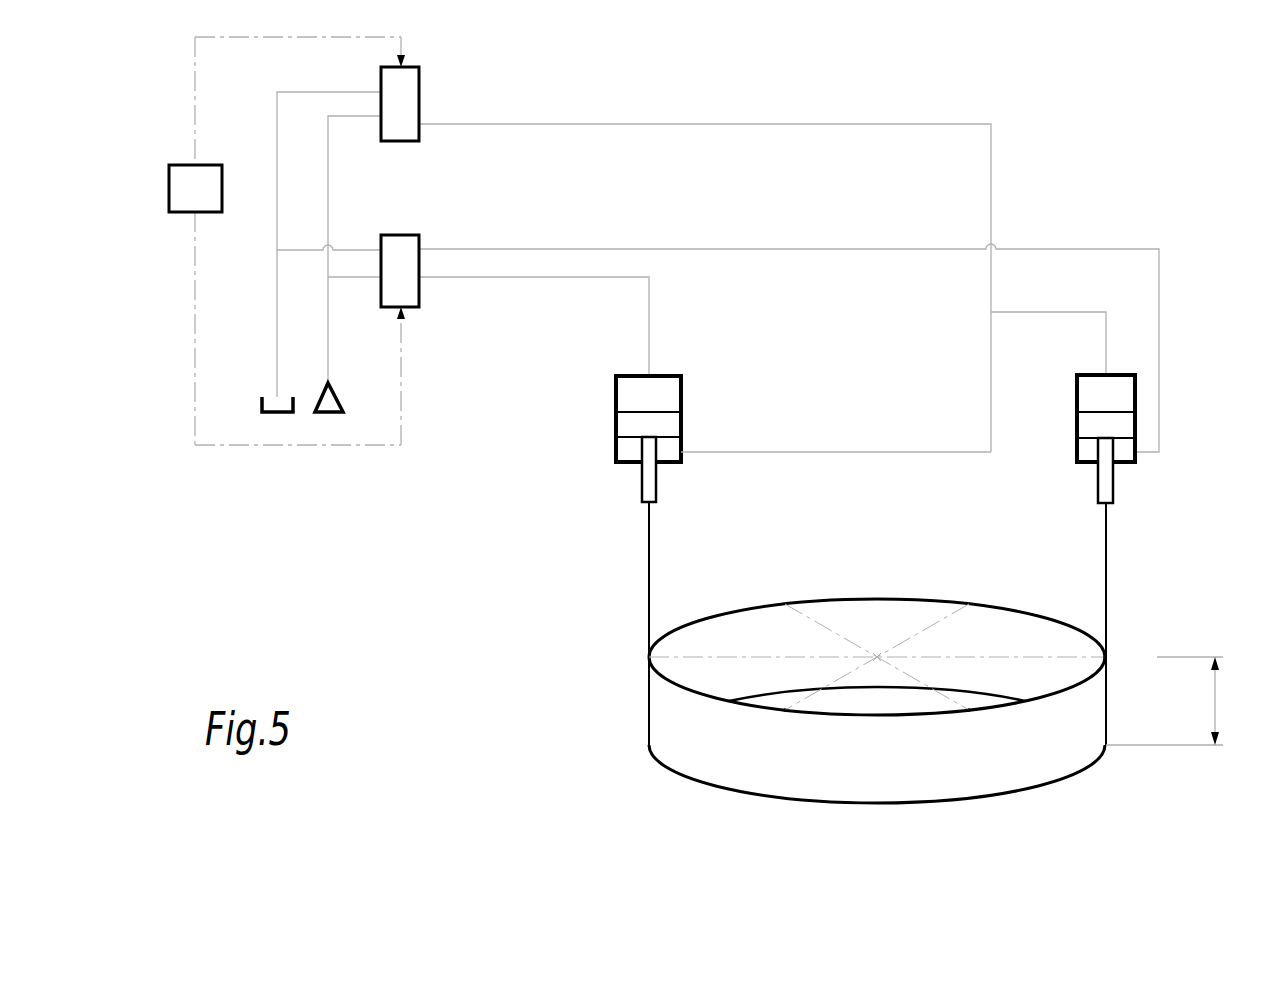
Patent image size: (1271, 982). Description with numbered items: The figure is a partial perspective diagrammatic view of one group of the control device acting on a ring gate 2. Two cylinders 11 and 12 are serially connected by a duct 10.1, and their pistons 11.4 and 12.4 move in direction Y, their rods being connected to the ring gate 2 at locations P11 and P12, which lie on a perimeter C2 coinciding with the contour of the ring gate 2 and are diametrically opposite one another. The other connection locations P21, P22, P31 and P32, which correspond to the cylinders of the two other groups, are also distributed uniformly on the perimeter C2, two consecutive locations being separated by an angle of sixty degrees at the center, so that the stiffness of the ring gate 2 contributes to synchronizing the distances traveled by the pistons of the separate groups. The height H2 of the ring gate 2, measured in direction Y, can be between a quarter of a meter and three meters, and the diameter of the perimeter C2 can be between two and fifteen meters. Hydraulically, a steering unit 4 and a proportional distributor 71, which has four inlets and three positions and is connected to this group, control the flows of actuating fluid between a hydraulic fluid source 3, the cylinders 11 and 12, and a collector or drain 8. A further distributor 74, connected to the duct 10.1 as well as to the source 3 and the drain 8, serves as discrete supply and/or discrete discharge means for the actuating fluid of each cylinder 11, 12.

The distributor 74 is at (400, 104).
The proportional distributor 71 is at (400, 271).
The steering unit 4 is at (195, 188).
The collector or drain 8 is at (277, 414).
The hydraulic fluid source 3 is at (328, 414).
The cylinder 11 is at (597, 493).
The piston 11.4 is at (657, 425).
The cylinder 12 is at (1153, 492).
The piston 12.4 is at (1118, 426).
The duct 10.1 is at (858, 452).
The ring gate 2 is at (877, 730).
The perimeter C2 is at (886, 597).
The location P11 is at (858, 659).
The location P12 is at (1125, 658).
The location P21 is at (770, 724).
The location P22 is at (893, 643).
The location P31 is at (984, 724).
The location P32 is at (862, 643).
The height H2 is at (1165, 701).